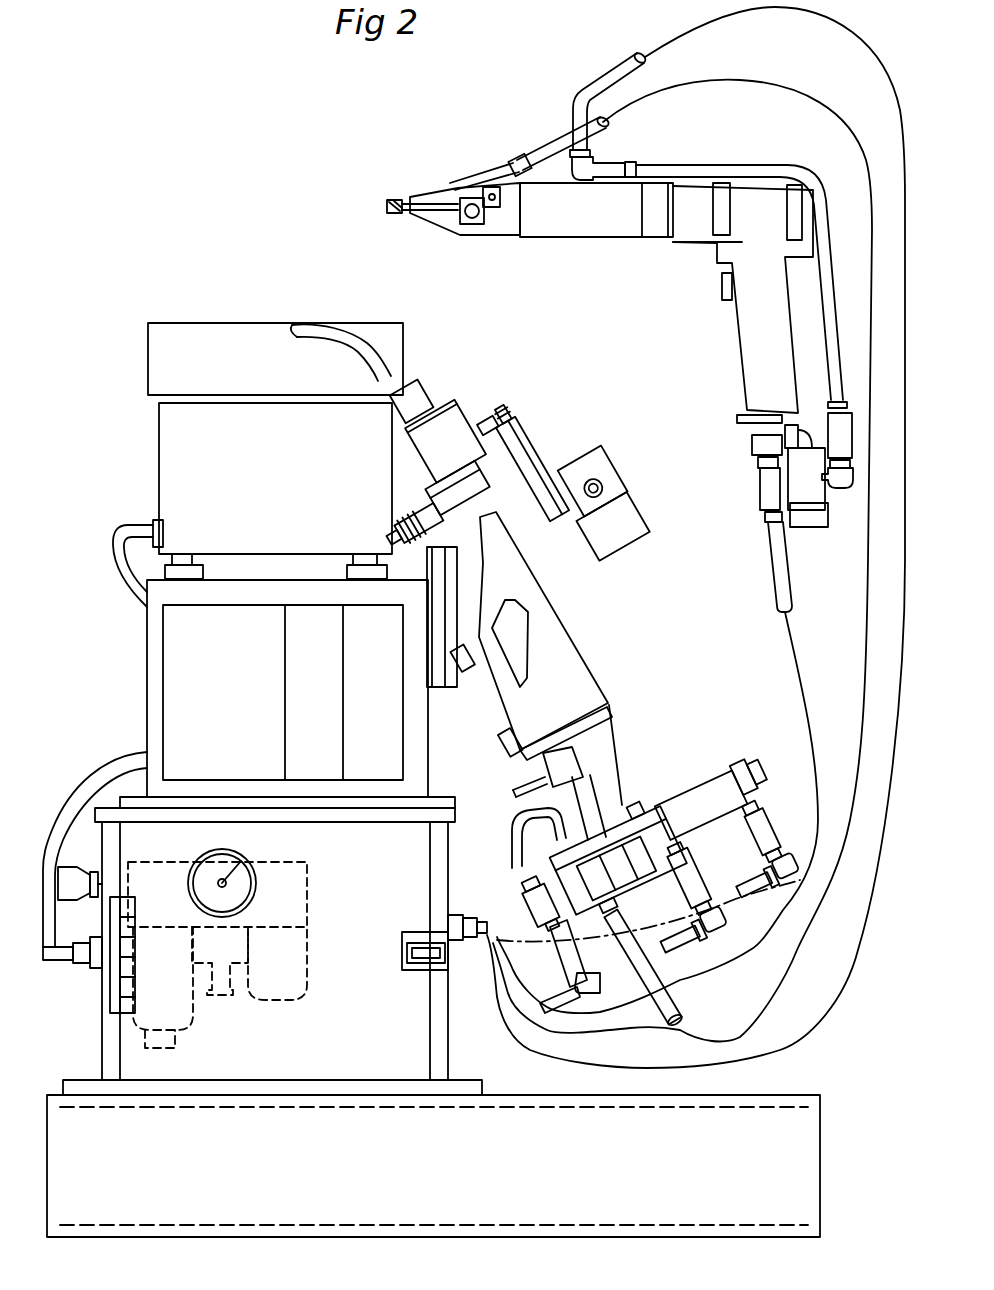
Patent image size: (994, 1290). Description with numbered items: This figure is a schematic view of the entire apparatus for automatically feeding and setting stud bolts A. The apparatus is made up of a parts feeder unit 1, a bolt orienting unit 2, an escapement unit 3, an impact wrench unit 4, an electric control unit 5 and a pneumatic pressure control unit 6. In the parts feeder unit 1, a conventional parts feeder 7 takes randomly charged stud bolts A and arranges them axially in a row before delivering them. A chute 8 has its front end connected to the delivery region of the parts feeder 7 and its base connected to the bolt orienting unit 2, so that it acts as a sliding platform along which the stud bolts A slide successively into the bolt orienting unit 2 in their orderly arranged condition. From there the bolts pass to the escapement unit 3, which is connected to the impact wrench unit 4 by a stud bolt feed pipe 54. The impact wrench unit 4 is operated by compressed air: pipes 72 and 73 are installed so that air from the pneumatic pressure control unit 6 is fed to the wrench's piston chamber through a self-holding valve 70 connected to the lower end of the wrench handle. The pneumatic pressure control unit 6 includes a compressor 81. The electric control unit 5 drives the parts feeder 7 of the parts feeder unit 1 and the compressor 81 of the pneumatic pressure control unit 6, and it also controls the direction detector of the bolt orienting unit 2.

The parts feeder unit 1 is at (318, 308).
The bolt orienting unit 2 is at (541, 436).
The escapement unit 3 is at (668, 772).
The impact wrench unit 4 is at (640, 265).
The electric control unit 5 is at (146, 694).
The pneumatic pressure control unit 6 is at (98, 1003).
The parts feeder 7 is at (152, 376).
The chute 8 is at (372, 335).
The stud bolt feed pipe 54 is at (553, 150).
The self-holding valve 70 is at (806, 497).
The pipe 72 is at (828, 283).
The pipe 73 is at (603, 96).
The compressor 81 is at (123, 1013).
The stud bolt A is at (394, 198).